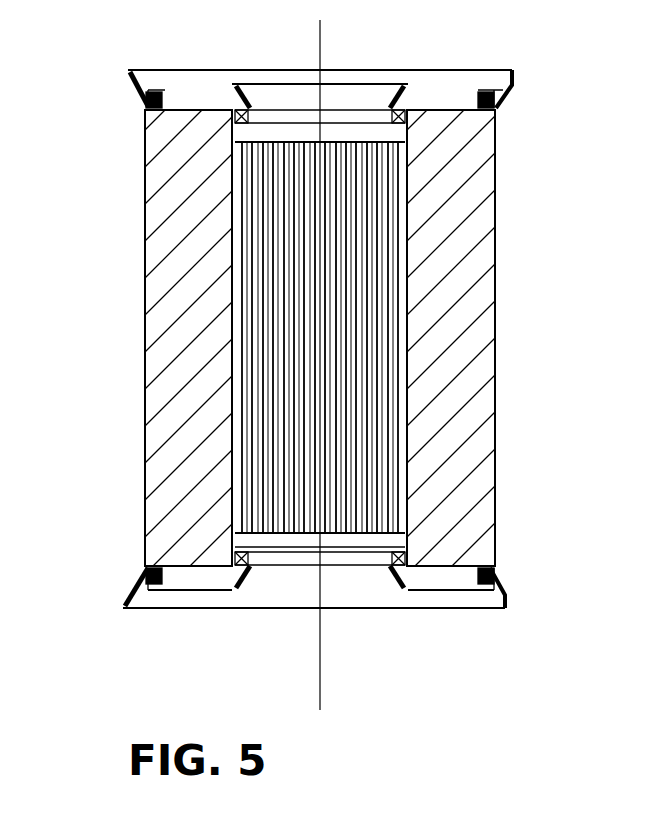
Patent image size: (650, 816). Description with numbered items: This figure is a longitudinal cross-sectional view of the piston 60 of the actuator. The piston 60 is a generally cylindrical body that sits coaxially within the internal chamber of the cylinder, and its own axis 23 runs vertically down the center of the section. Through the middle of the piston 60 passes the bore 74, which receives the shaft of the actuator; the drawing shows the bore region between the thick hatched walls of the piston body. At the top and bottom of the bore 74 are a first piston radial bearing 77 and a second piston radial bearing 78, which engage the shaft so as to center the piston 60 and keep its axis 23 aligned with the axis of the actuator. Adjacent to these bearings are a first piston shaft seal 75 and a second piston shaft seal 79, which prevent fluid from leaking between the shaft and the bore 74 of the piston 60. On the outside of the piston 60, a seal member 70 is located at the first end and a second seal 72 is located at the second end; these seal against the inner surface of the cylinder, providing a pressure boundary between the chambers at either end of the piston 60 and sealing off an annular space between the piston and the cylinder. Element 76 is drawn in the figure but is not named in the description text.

The axis 23 is at (321, 688).
The piston 60 is at (470, 160).
The seal member 70 is at (124, 590).
The second seal 72 is at (512, 82).
The bore 74 is at (262, 328).
The first piston shaft seal 75 is at (398, 600).
The filter media 76 is at (368, 308).
The first piston radial bearing 77 is at (256, 566).
The second piston radial bearing 78 is at (390, 113).
The second piston shaft seal 79 is at (250, 84).